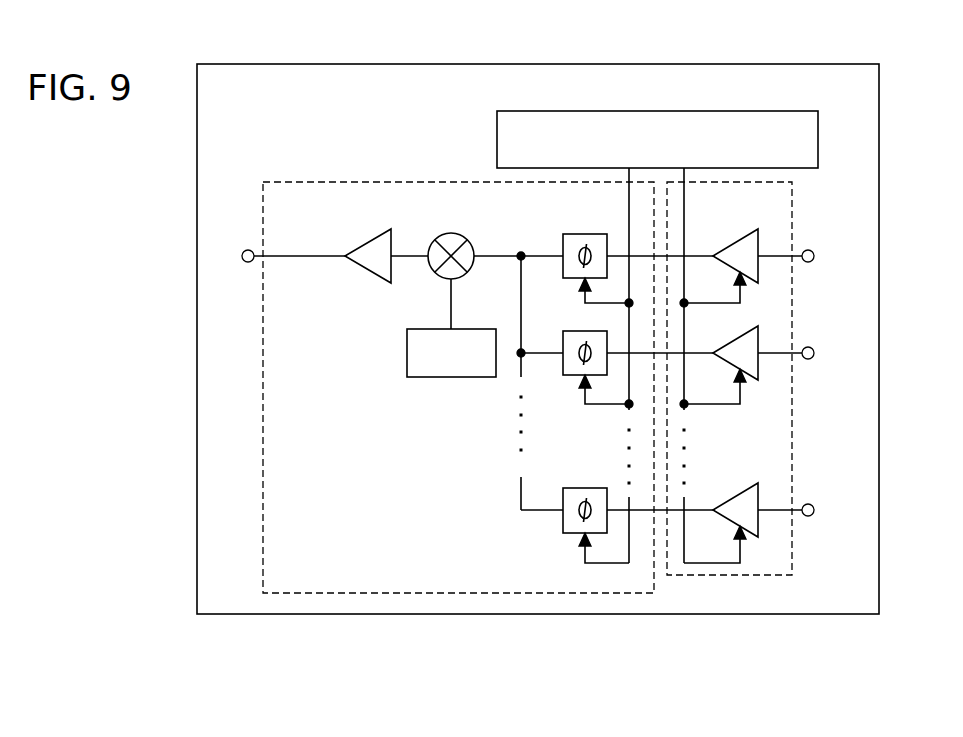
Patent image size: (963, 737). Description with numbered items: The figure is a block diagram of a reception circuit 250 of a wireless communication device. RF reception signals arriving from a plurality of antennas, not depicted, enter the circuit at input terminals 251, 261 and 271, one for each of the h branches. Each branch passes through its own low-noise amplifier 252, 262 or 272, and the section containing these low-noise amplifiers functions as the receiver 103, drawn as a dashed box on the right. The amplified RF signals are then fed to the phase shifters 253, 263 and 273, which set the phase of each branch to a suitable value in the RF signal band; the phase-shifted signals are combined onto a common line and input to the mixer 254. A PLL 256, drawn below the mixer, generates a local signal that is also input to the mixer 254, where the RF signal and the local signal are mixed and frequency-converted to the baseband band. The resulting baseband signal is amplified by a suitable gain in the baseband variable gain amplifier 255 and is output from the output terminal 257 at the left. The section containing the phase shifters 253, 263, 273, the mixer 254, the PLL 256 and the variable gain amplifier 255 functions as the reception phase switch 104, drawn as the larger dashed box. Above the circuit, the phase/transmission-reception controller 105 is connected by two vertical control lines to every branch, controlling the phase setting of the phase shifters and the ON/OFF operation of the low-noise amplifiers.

The reception circuit 250 is at (815, 64).
The phase/transmission-reception controller 105 is at (768, 111).
The reception phase switch 104 is at (287, 182).
The receiver 103 is at (792, 207).
The output terminal 257 is at (245, 250).
The variable gain amplifier 255 is at (377, 237).
The mixer 254 is at (466, 240).
The PLL 256 is at (420, 329).
The phase shifter 253 is at (572, 234).
The phase shifter 263 is at (572, 331).
The phase shifter 273 is at (572, 488).
The low-noise amplifier 252 is at (738, 241).
The low-noise amplifier 262 is at (738, 338).
The low-noise amplifier 272 is at (738, 495).
The input terminal 251 is at (812, 251).
The input terminal 261 is at (812, 348).
The input terminal 271 is at (812, 506).